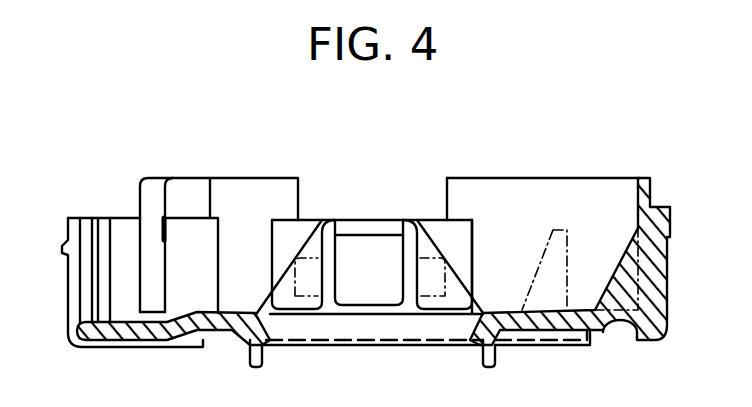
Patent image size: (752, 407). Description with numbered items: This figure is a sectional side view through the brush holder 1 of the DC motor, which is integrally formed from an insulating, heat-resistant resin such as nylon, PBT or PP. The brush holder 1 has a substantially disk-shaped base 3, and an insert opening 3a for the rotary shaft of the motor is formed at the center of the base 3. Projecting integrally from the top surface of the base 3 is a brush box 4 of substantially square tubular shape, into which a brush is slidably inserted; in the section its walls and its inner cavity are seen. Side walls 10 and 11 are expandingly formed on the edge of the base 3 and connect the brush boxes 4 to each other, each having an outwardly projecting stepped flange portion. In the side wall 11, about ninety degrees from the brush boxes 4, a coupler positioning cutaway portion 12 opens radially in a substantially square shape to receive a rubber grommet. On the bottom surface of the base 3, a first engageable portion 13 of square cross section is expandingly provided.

The brush holder 1 is at (486, 119).
The base 3 is at (232, 328).
The insert opening 3a is at (415, 344).
The brush box 4 is at (367, 218).
The side wall 10 is at (572, 178).
The side wall 11 is at (202, 178).
The coupler positioning cutaway portion 12 is at (107, 226).
The first engageable portion 13 is at (194, 235).